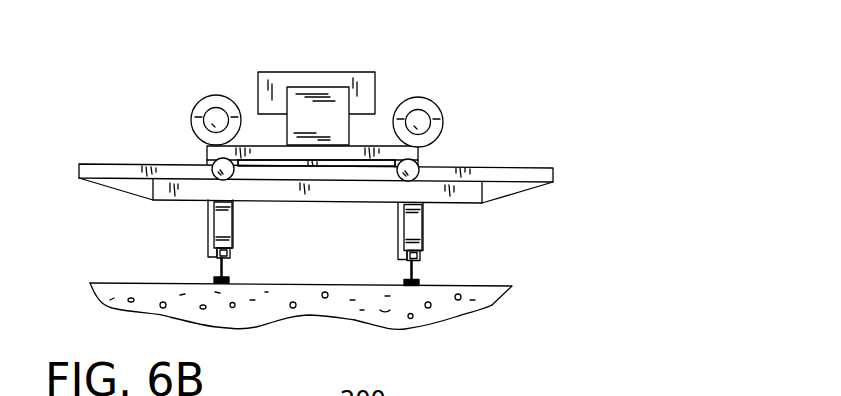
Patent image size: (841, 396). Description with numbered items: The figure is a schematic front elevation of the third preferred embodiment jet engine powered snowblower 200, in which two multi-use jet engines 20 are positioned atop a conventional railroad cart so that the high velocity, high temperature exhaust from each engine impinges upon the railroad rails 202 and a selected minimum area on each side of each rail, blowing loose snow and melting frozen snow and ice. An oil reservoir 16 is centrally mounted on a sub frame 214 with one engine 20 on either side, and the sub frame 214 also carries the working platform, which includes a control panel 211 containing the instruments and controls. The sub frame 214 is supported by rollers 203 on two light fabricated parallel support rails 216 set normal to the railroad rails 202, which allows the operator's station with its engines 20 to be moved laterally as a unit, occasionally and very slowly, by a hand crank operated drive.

The oil reservoir 16 is at (338, 98).
The multi-use jet engine 20 is at (212, 96).
The jet engine powered snowblower 200 is at (342, 248).
The railroad rail 202 is at (417, 283).
The roller 203 is at (433, 168).
The control panel 211 is at (443, 395).
The sub frame 214 is at (205, 148).
The support rail 216 is at (553, 170).